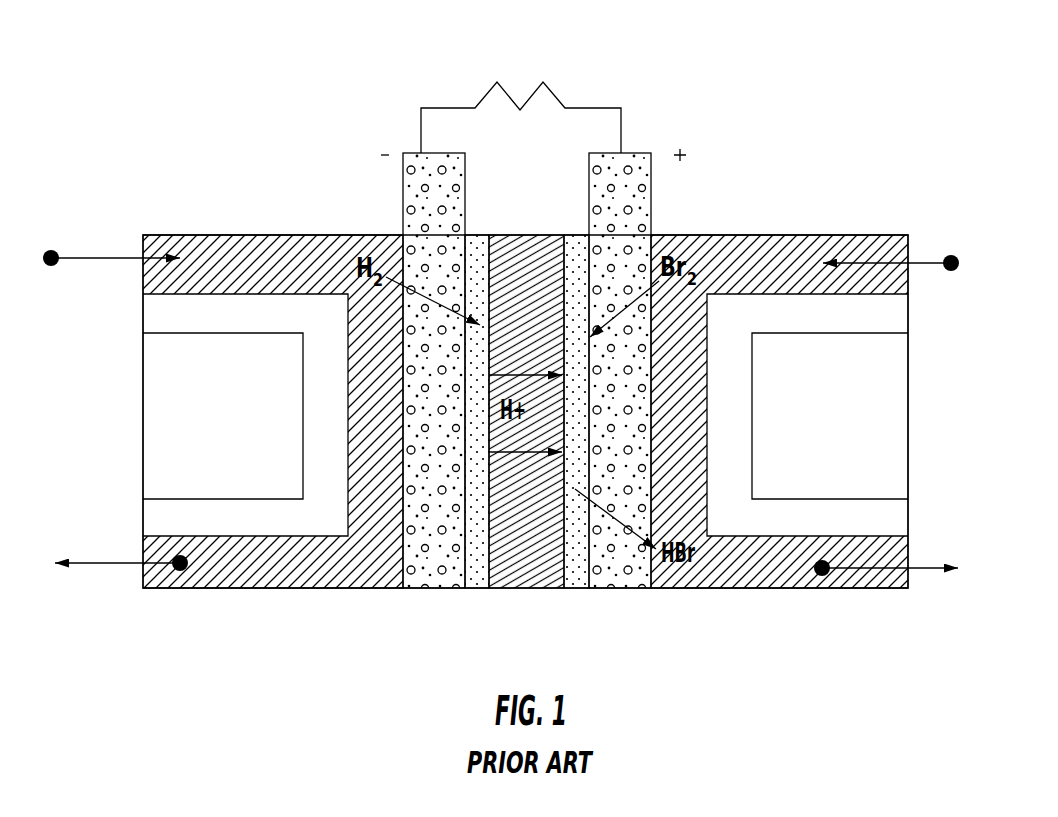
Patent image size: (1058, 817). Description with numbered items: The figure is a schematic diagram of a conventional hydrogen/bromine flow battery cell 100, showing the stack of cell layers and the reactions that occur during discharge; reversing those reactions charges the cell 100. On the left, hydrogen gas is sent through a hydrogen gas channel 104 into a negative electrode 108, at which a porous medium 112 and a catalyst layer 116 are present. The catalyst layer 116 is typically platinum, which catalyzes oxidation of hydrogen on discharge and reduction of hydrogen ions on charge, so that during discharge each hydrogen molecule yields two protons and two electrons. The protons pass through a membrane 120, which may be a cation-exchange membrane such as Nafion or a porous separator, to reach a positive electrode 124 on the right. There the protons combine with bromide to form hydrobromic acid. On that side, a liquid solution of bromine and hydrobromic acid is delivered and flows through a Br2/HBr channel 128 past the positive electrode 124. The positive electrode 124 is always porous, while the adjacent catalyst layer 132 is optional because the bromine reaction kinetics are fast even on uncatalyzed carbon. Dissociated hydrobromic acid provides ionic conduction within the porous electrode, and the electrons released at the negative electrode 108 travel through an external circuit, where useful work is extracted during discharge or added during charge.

The flow battery cell 100 is at (899, 109).
The hydrogen gas channel 104 is at (317, 256).
The negative electrode 108 is at (408, 103).
The porous medium 112 is at (403, 192).
The catalyst layer 116 is at (479, 235).
The membrane 120 is at (512, 579).
The positive electrode 124 is at (647, 129).
The Br2/HBr channel 128 is at (757, 262).
The catalyst layer 132 is at (575, 588).